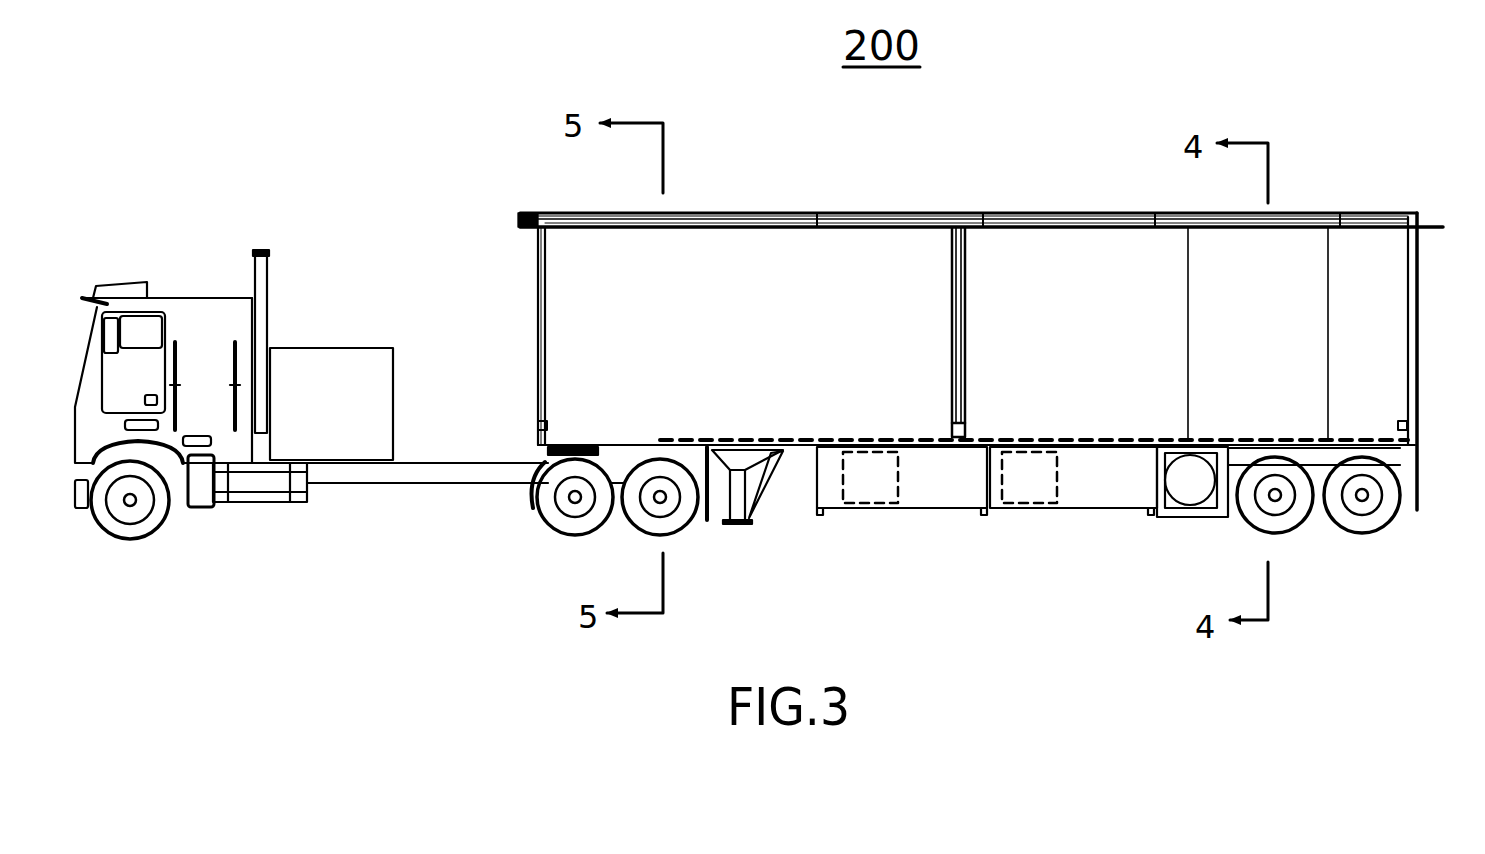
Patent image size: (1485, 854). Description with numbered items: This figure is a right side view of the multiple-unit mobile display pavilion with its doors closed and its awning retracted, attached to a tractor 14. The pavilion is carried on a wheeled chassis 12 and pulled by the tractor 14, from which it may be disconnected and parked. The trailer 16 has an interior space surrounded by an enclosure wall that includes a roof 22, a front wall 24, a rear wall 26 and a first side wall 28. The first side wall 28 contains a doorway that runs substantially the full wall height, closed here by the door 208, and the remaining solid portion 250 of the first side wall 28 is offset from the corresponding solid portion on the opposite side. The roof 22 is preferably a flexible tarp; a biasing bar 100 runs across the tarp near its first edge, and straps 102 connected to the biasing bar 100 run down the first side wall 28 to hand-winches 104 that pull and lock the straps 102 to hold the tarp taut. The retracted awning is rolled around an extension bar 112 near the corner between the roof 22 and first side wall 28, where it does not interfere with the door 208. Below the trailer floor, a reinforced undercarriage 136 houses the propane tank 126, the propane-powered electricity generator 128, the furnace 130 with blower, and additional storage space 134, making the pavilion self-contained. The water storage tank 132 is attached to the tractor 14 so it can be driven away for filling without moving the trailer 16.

The wheeled chassis 12 is at (533, 521).
The tractor 14 is at (189, 291).
The trailer 16 is at (1035, 200).
The roof 22 is at (862, 212).
The front wall 24 is at (538, 288).
The rear wall 26 is at (1418, 338).
The first side wall 28 is at (582, 276).
The biasing bar 100 is at (518, 224).
The straps 102 is at (545, 375).
The hand-winches 104 is at (549, 430).
The extension bar 112 is at (532, 207).
The tank 126 is at (1185, 485).
The electricity generator 128 is at (1025, 480).
The furnace 130 is at (873, 487).
The water storage tank 132 is at (327, 363).
The storage space 134 is at (1105, 487).
The undercarriage 136 is at (812, 488).
The door 208 is at (1215, 306).
The solid portion 250 is at (670, 325).